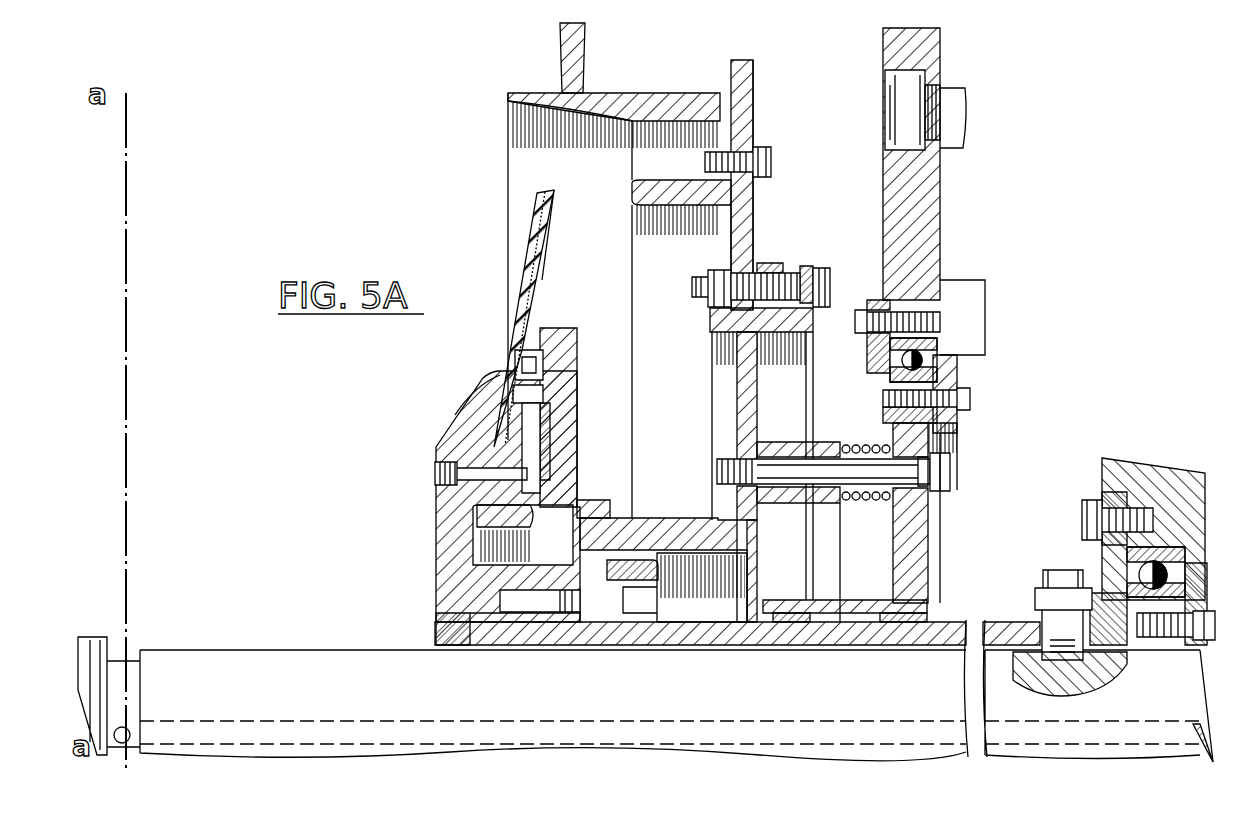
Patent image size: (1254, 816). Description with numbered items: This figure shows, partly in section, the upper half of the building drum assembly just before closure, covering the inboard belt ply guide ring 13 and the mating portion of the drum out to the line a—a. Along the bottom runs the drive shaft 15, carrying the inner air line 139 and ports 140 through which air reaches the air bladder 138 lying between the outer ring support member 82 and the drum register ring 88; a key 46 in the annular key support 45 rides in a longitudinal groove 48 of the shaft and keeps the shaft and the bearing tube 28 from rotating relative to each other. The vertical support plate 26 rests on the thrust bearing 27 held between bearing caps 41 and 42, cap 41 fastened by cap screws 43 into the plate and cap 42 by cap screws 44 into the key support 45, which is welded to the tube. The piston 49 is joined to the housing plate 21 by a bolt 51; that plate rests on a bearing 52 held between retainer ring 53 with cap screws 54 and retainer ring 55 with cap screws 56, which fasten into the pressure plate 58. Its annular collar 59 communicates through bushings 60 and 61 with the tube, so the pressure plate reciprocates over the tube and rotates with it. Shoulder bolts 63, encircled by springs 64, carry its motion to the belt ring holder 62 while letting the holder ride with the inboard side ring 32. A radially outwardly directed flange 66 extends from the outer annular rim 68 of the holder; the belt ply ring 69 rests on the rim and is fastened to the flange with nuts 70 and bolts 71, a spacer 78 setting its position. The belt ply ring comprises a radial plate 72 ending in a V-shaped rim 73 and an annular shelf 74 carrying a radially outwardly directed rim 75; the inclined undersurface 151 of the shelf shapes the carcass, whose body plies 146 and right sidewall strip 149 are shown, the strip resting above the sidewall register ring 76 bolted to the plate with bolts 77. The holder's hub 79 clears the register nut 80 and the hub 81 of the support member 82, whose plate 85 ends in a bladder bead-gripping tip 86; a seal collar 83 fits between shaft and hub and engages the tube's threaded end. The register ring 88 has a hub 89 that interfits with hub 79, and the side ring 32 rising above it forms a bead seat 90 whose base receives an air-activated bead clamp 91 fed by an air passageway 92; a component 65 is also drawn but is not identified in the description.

The inboard belt ply guide ring 13 is at (512, 61).
The drive shaft 15 is at (1190, 698).
The housing plate 21 is at (937, 48).
The vertical support plate 26 is at (1165, 470).
The thrust bearing 27 is at (1180, 556).
The bearing tube 28 is at (670, 638).
The inboard side ring 32 is at (568, 352).
The bearing cap 41 is at (1105, 493).
The bearing cap 42 is at (1198, 600).
The cap screws 43 is at (1085, 521).
The cap screws 44 is at (1213, 640).
The annular key support 45 is at (1130, 640).
The key 46 is at (1045, 612).
The longitudinal groove 48 is at (1110, 664).
The piston 49 is at (958, 100).
The bolt 51 is at (895, 108).
The bearing 52 is at (920, 352).
The retainer ring 53 is at (905, 300).
The cap screws 54 is at (865, 337).
The retainer ring 55 is at (955, 385).
The cap screws 56 is at (970, 402).
The pressure plate 58 is at (935, 450).
The annular collar 59 is at (856, 600).
The bushing 60 is at (785, 616).
The bushing 61 is at (900, 622).
The belt ring holder 62 is at (750, 415).
The shoulder bolts 63 is at (950, 478).
The springs 64 is at (862, 503).
The flange 65 is at (800, 452).
The radially outwardly directed flange 66 is at (808, 268).
The outer annular rim 68 is at (712, 324).
The belt ply ring 69 is at (767, 119).
The nuts 70 is at (715, 272).
The bolts 71 is at (822, 286).
The radial plate 72 is at (760, 213).
The V-shaped rim 73 is at (746, 70).
The annular shelf 74 is at (657, 98).
The radially outwardly directed rim 75 is at (580, 50).
The sidewall register ring 76 is at (638, 190).
The bolts 77 is at (775, 165).
The spacer 78 is at (772, 265).
The hub 79 is at (680, 527).
The register nut 80 is at (656, 586).
The hub 81 is at (592, 612).
The outer ring support member 82 is at (424, 566).
The seal collar 83 is at (440, 628).
The plate 85 is at (445, 500).
The bladder bead-gripping tip 86 is at (480, 388).
The annular drum register ring 88 is at (555, 438).
The hub 89 is at (600, 503).
The bead seat 90 is at (560, 340).
The air-activated bead clamp 91 is at (547, 393).
The air passageway 92 is at (535, 471).
The air bladder 138 is at (518, 283).
The inner air line 139 is at (285, 722).
The ports 140 is at (128, 729).
The body plies 146 is at (535, 213).
The right sidewall strip 149 is at (548, 240).
The inclined undersurface 151 is at (530, 110).